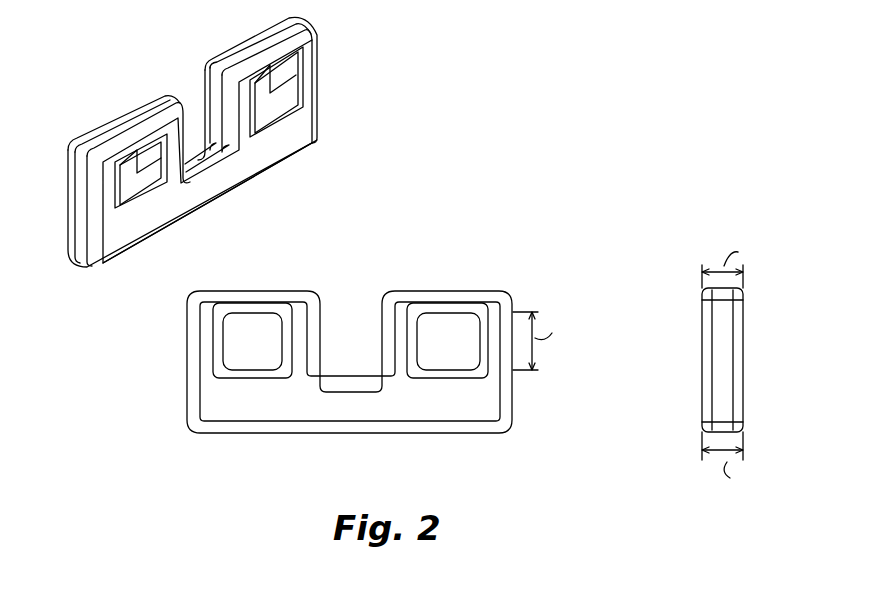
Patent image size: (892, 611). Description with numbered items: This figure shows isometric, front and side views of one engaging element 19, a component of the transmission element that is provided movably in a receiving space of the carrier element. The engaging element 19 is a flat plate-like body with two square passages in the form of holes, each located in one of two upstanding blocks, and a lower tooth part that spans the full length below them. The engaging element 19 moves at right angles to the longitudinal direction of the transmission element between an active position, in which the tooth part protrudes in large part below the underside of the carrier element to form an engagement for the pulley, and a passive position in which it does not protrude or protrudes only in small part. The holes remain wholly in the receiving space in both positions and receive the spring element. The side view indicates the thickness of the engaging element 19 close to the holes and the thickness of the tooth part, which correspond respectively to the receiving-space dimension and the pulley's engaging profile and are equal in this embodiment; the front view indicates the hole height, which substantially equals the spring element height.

The engaging element 19 is at (436, 257).